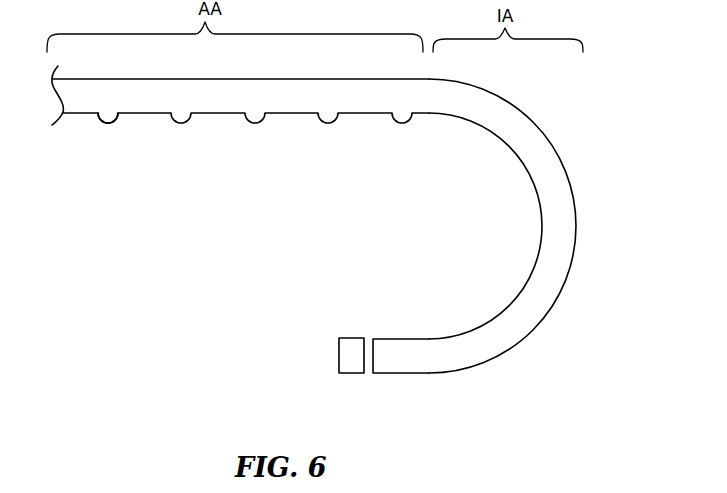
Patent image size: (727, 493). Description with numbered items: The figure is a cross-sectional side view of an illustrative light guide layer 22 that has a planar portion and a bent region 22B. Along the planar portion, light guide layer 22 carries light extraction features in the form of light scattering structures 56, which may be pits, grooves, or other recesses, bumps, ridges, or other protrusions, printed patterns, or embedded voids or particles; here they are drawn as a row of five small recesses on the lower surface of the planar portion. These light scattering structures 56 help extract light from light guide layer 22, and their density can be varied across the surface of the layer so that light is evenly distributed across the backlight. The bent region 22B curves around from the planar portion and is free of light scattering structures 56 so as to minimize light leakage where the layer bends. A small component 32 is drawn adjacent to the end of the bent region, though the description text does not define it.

The light guide layer 22 is at (348, 219).
The bent region 22B is at (567, 213).
The light scattering structures 56 is at (108, 124).
The end cap / connector block 32 is at (339, 355).